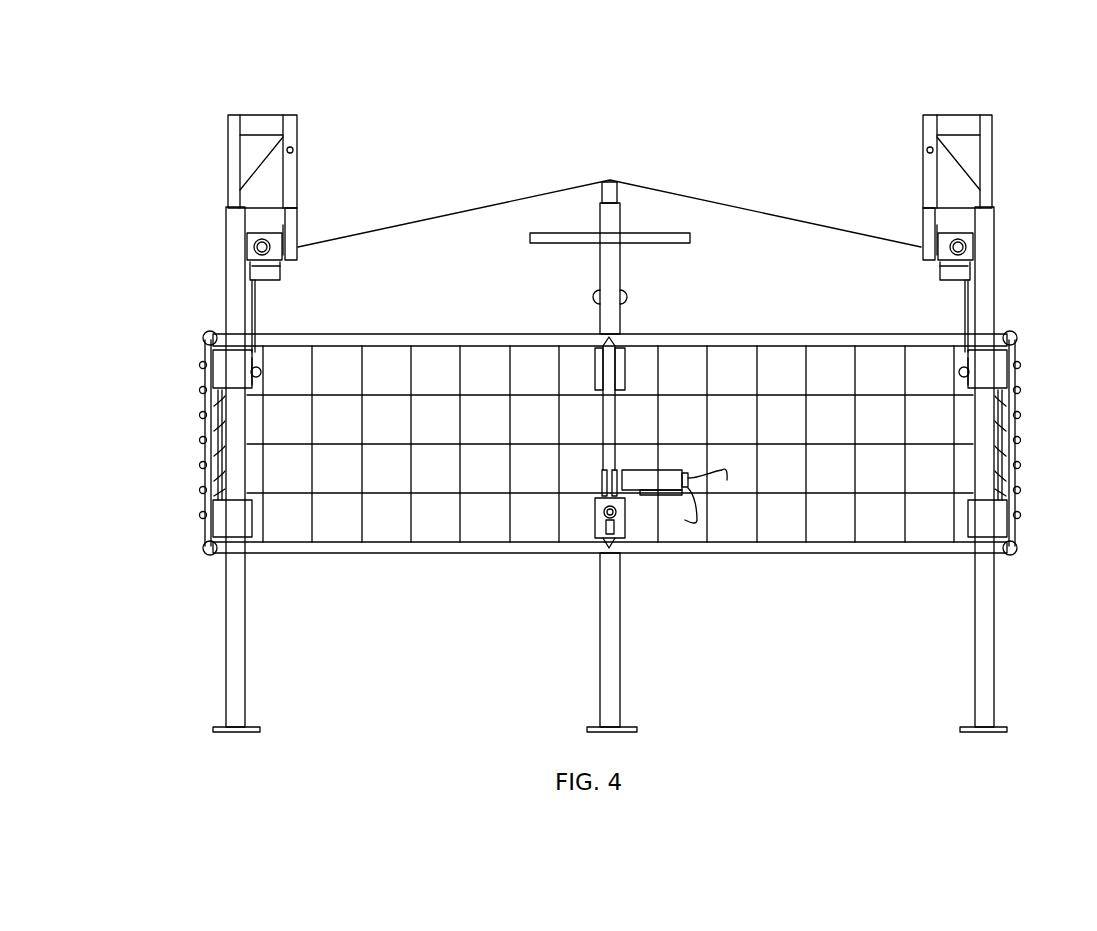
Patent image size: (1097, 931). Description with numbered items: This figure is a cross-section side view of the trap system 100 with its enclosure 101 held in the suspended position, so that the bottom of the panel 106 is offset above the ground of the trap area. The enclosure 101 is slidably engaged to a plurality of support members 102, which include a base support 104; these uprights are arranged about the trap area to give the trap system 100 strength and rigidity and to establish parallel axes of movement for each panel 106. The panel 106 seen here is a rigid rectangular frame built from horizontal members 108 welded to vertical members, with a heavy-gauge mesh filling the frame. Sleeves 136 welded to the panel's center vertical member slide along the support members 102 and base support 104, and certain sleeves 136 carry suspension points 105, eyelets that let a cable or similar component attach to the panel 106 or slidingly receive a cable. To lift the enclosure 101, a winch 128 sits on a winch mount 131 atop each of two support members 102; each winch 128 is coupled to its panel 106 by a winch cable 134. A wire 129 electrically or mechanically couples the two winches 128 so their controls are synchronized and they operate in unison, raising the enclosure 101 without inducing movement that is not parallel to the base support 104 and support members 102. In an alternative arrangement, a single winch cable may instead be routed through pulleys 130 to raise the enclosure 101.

The trap system 100 is at (786, 116).
The enclosure 101 is at (429, 296).
The support members 102 is at (226, 672).
The base support 104 is at (602, 668).
The suspension point 105 is at (263, 374).
The panel 106 is at (527, 328).
The horizontal member 108 is at (736, 333).
The winch 128 is at (258, 236).
The wire 129 is at (455, 211).
The pulley 130 is at (600, 473).
The winch mount 131 is at (299, 160).
The winch cable 134 is at (254, 306).
The sleeve 136 is at (232, 369).